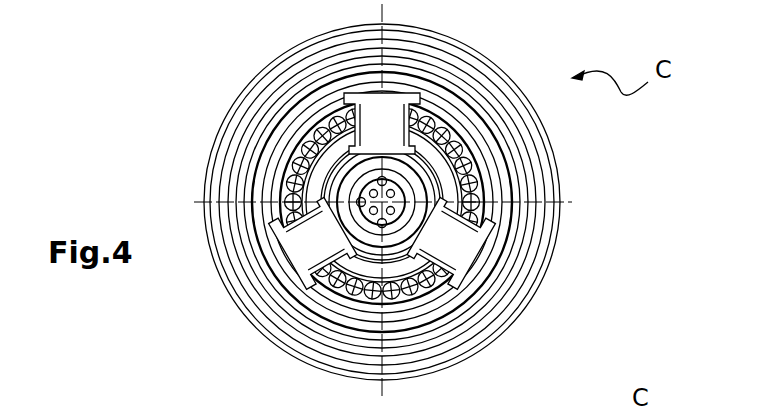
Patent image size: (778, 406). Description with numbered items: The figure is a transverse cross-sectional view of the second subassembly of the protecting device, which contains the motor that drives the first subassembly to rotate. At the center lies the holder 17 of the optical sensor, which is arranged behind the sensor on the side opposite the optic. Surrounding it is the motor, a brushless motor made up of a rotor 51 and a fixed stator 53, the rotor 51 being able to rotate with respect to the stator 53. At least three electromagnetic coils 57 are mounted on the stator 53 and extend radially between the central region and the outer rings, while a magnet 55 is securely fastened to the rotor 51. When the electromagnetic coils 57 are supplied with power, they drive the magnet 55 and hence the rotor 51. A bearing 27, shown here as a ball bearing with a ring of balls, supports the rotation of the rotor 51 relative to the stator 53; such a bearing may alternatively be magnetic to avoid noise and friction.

The rotor 51 is at (305, 85).
The bearing 27 is at (303, 138).
The stator 53 is at (323, 177).
The electromagnetic coil 57 is at (392, 105).
The magnet 55 is at (507, 168).
The holder 17 is at (365, 242).